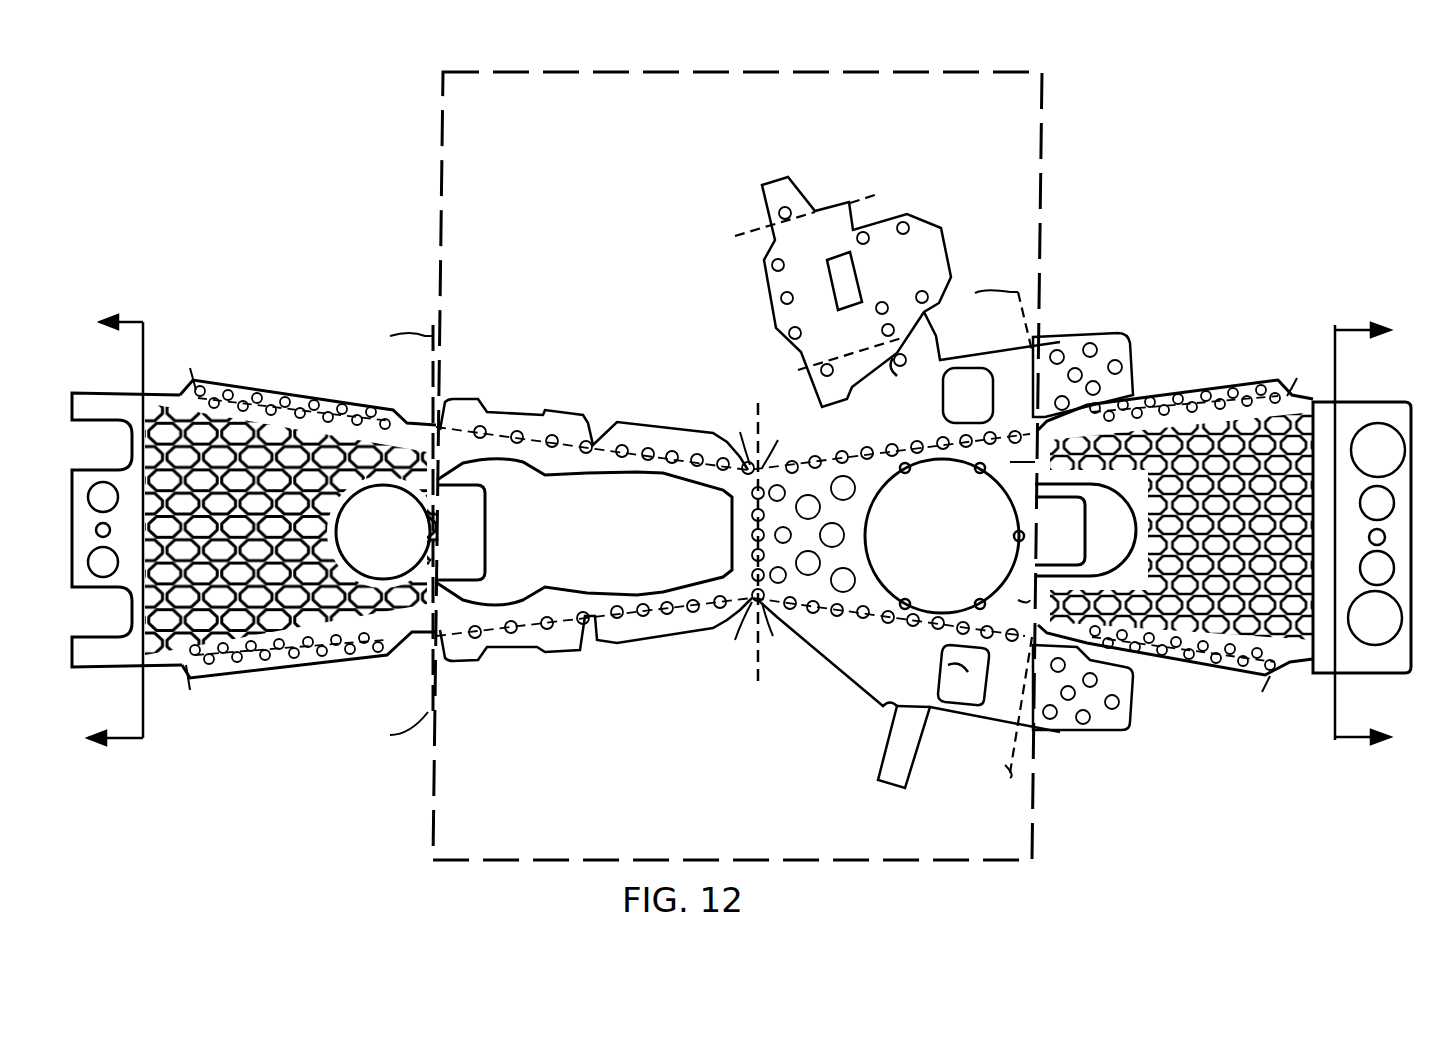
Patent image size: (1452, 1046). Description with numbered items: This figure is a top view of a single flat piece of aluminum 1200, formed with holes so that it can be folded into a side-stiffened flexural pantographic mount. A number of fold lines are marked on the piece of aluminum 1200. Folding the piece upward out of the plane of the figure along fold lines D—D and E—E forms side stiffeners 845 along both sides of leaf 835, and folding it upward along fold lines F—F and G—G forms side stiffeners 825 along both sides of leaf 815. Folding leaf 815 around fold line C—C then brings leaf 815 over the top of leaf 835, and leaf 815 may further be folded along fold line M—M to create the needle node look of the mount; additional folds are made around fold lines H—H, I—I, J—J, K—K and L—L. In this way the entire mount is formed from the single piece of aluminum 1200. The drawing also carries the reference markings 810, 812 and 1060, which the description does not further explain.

The section line 810 is at (139, 320).
The dashed outline region 812 is at (858, 72).
The leaf 815 is at (163, 660).
The side stiffeners 825 is at (300, 398).
The leaf 835 is at (1300, 660).
The side stiffeners 845 is at (1222, 388).
The rounded aperture 1060 is at (940, 655).
The flat piece of aluminum 1200 is at (1080, 258).